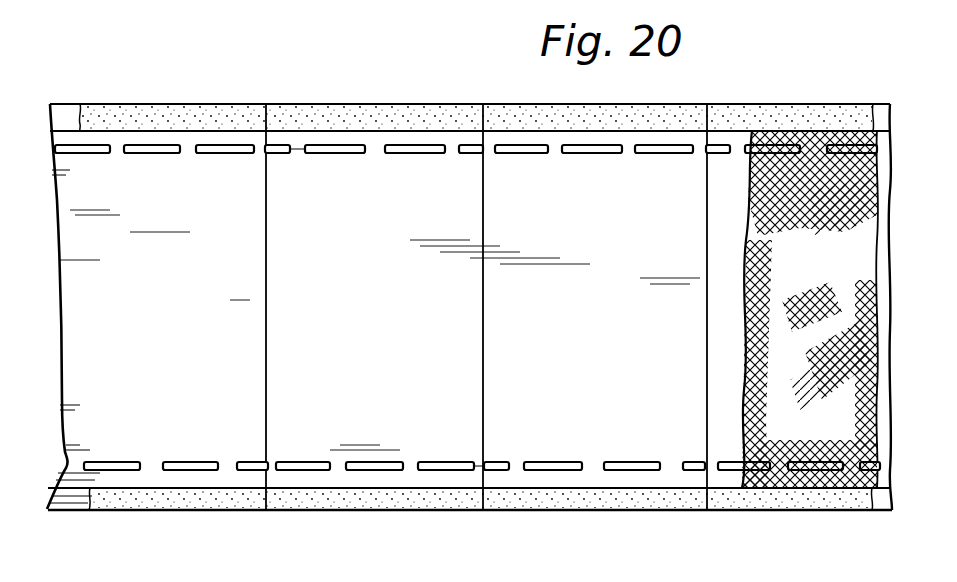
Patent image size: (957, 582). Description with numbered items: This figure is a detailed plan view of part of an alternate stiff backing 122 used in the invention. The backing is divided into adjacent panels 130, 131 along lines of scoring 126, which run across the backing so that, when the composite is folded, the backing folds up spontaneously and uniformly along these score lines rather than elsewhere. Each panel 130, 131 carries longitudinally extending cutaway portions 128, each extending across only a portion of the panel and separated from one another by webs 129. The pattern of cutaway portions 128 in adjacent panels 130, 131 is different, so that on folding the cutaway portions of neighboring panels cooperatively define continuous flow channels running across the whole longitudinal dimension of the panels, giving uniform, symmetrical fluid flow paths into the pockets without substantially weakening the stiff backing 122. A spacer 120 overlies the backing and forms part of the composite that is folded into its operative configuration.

The spacer 120 is at (780, 265).
The stiff backing 122 is at (286, 57).
The lines of scoring 126 is at (267, 262).
The cutaway portions 128 is at (512, 146).
The webs 129 is at (480, 461).
The panel 130 is at (403, 349).
The panel 131 is at (182, 322).